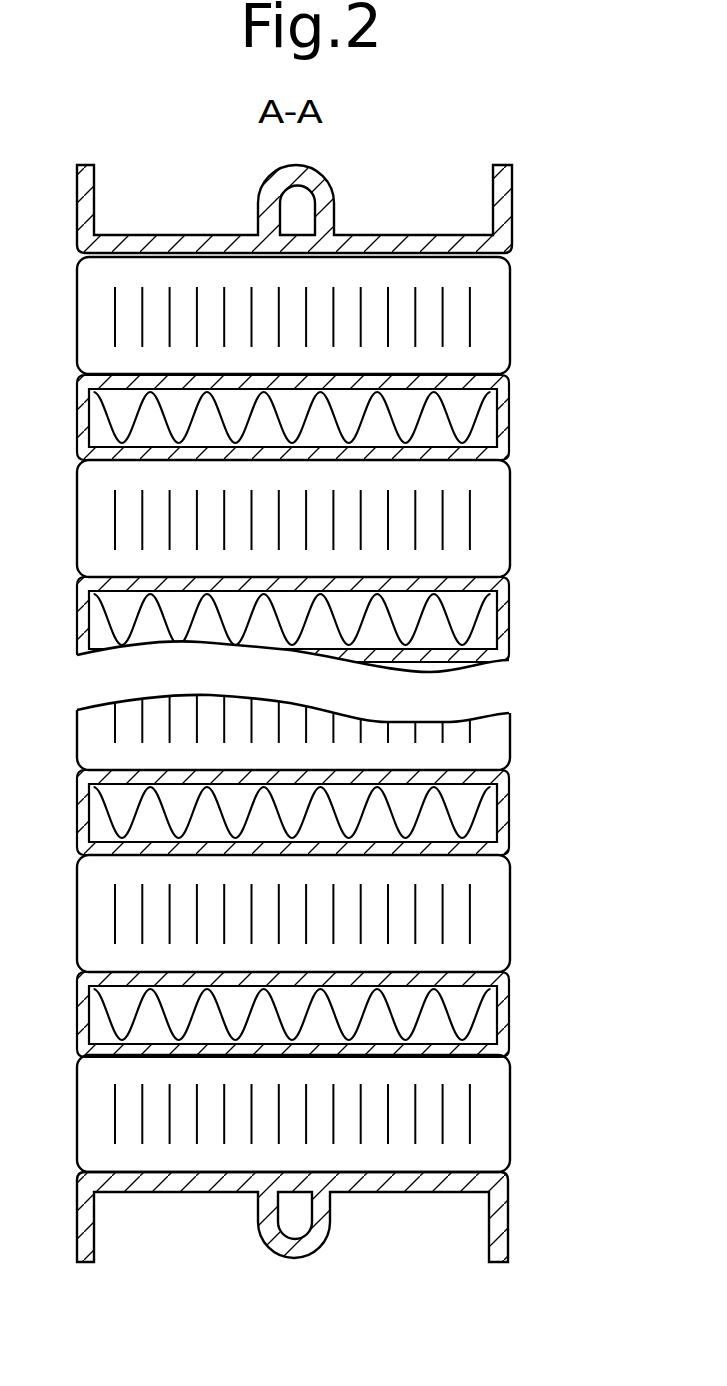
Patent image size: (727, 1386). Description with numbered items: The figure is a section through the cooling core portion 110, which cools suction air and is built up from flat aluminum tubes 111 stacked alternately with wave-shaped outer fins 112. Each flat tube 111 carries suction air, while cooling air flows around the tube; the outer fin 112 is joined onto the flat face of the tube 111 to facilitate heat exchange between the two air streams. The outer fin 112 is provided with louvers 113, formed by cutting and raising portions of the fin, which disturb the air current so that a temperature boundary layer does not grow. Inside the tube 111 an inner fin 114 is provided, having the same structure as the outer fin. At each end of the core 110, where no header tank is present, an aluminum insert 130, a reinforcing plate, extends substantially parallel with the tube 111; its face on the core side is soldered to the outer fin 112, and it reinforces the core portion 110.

The cooling core portion 110 is at (538, 584).
The flat tube 111 is at (343, 417).
The outer fin 112 is at (346, 315).
The louvers 113 is at (470, 325).
The inner fin 114 is at (448, 416).
The insert 130 is at (512, 204).